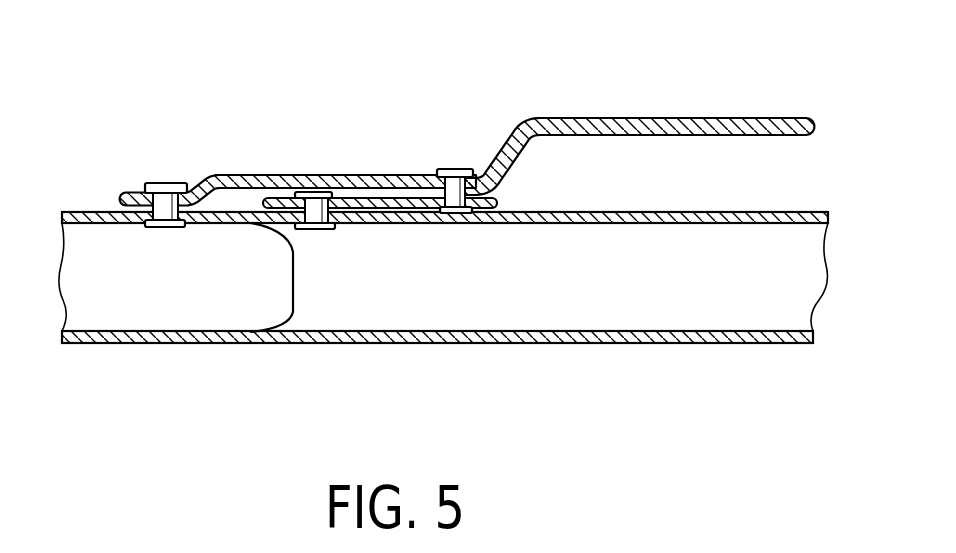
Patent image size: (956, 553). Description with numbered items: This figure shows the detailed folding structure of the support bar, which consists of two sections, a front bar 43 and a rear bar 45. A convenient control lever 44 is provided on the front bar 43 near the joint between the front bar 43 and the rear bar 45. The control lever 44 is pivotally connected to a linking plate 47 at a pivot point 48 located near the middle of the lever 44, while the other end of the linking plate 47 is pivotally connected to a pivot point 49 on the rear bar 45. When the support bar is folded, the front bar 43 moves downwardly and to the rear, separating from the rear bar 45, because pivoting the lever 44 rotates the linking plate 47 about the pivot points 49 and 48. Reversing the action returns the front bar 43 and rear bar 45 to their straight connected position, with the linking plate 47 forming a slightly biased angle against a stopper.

The tube 43 is at (443, 315).
The spring contact arm 44 is at (635, 117).
The tube wall 45 is at (584, 344).
The mounting bracket 47 is at (386, 197).
The rivet 48 is at (460, 172).
The rivet 49 is at (311, 193).